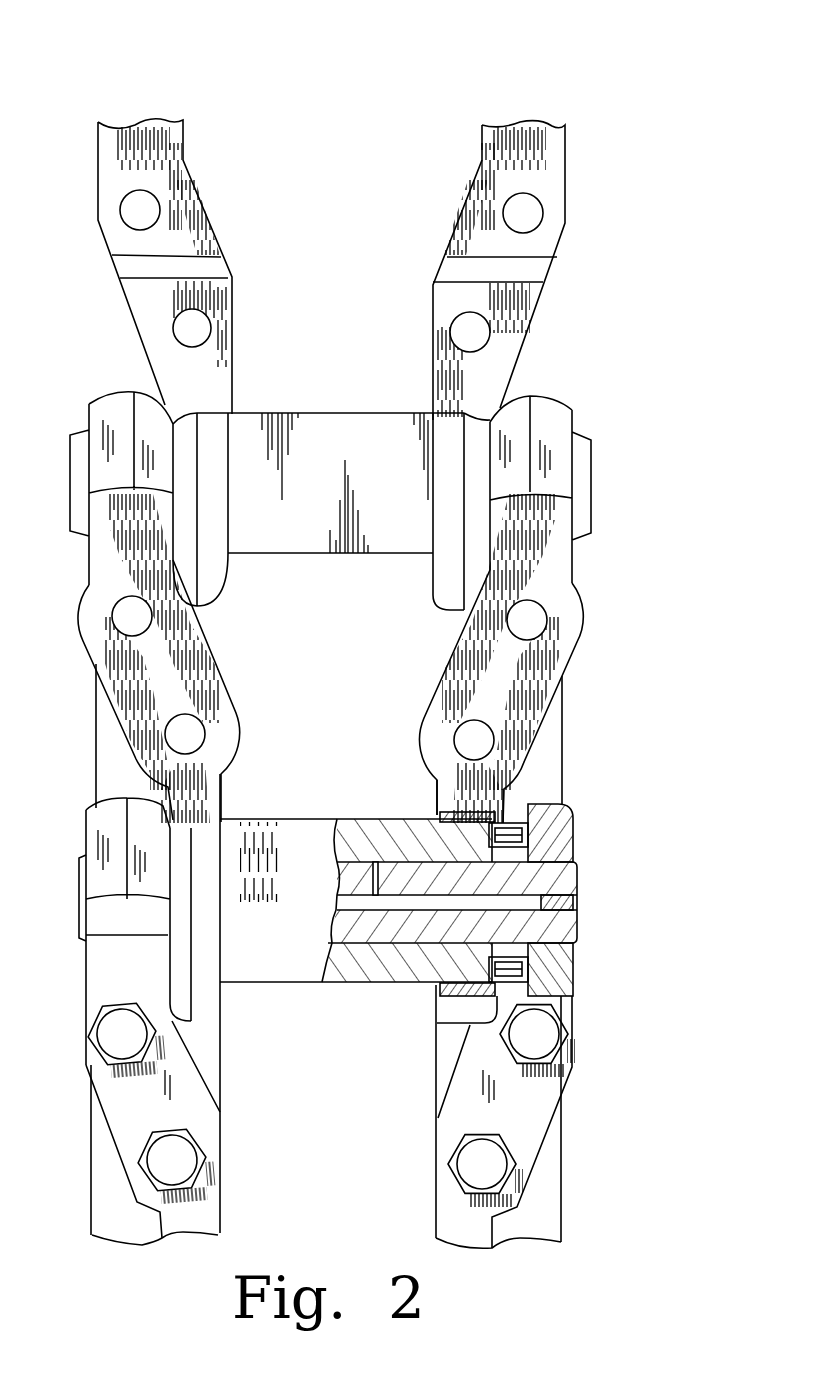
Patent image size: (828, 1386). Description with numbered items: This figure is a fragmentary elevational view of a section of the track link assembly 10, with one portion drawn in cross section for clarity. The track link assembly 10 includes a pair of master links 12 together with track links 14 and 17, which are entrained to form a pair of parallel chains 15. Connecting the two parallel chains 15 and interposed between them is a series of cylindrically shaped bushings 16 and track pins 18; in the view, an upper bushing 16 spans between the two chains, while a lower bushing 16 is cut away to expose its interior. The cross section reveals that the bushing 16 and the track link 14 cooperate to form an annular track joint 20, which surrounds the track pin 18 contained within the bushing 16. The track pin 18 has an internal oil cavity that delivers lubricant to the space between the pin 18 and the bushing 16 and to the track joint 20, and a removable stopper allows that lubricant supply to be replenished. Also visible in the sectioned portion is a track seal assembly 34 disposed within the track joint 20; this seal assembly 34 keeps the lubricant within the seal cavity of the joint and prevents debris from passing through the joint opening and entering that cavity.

The track link assembly 10 is at (688, 70).
The master link 12 is at (98, 167).
The track link 14 is at (573, 808).
The parallel chain 15 is at (149, 88).
The bushing 16 is at (335, 413).
The track link 17 is at (441, 815).
The track pin 18 is at (591, 447).
The track joint 20 is at (565, 972).
The track seal assembly 34 is at (552, 996).